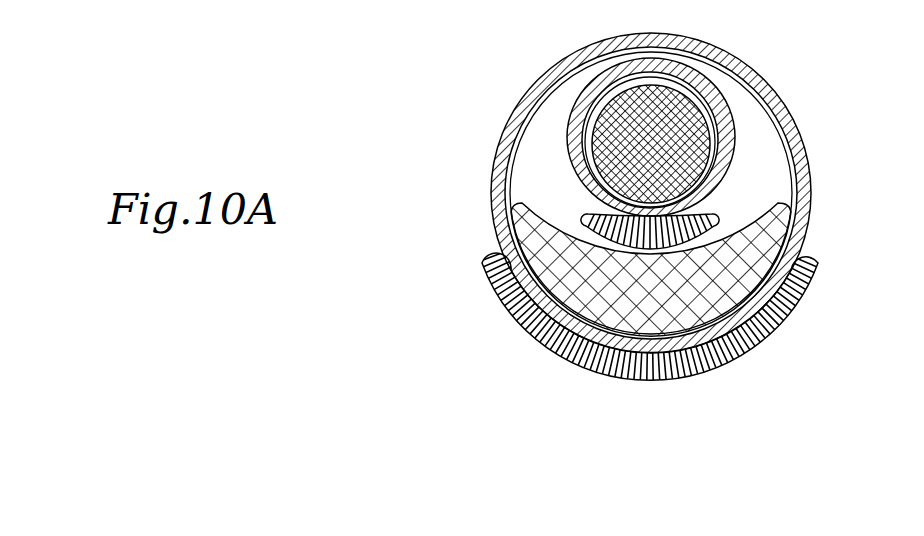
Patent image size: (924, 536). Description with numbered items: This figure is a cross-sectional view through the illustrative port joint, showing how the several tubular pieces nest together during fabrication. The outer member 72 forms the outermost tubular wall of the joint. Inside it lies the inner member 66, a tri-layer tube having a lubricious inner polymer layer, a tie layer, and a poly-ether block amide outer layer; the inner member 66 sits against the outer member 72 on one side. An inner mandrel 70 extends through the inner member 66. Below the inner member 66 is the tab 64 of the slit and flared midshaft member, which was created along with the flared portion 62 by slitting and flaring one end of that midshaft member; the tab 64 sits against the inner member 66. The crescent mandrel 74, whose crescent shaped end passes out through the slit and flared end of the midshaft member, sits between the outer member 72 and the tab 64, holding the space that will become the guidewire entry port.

The flared portion 62 is at (516, 307).
The tab 64 is at (713, 214).
The inner member 66 is at (581, 101).
The inner mandrel 70 is at (702, 118).
The outer member 72 is at (502, 152).
The crescent mandrel 74 is at (771, 329).